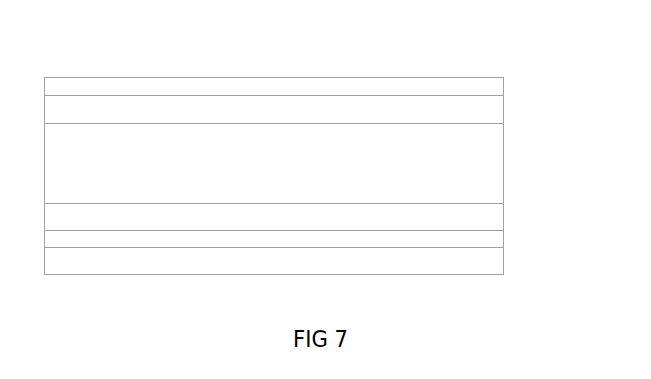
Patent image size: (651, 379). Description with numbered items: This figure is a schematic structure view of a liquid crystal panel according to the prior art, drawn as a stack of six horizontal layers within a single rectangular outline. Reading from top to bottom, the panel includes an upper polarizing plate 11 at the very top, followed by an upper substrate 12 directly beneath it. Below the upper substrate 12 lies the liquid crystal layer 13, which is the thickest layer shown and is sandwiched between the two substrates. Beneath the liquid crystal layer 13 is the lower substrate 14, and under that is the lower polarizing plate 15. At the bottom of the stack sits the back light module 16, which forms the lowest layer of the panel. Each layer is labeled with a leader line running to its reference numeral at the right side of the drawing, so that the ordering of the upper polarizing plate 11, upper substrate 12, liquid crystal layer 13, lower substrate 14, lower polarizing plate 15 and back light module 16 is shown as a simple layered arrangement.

The upper polarizing plate 11 is at (458, 83).
The upper substrate 12 is at (486, 112).
The liquid crystal layer 13 is at (475, 175).
The lower substrate 14 is at (486, 220).
The lower polarizing plate 15 is at (475, 240).
The back light module 16 is at (475, 268).